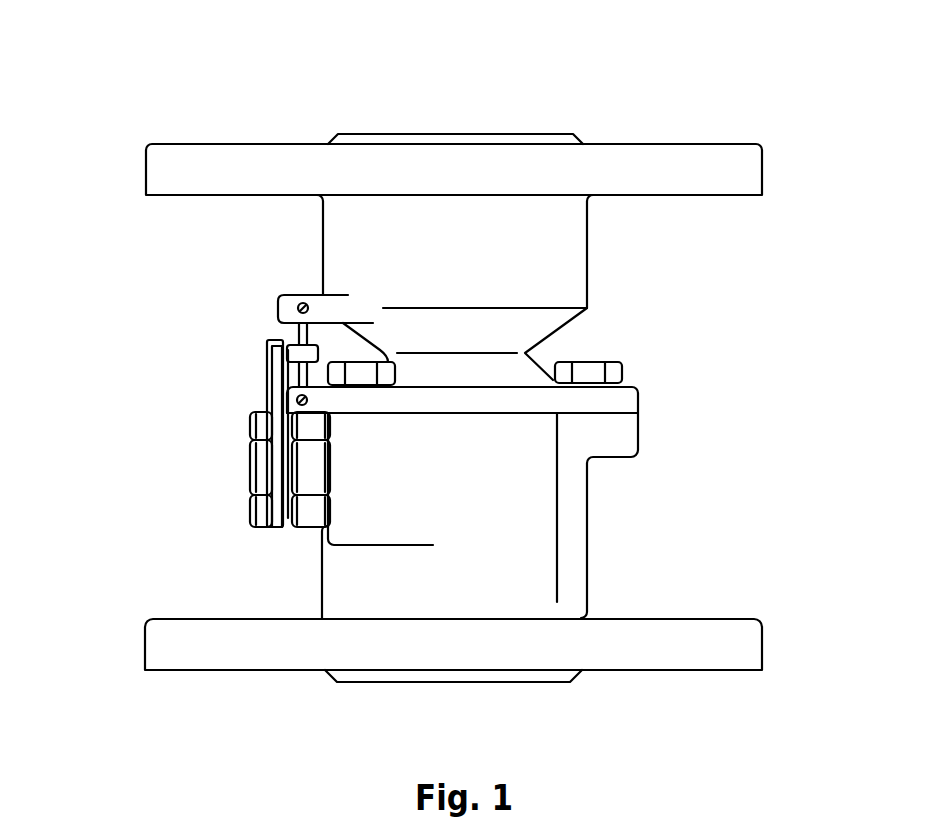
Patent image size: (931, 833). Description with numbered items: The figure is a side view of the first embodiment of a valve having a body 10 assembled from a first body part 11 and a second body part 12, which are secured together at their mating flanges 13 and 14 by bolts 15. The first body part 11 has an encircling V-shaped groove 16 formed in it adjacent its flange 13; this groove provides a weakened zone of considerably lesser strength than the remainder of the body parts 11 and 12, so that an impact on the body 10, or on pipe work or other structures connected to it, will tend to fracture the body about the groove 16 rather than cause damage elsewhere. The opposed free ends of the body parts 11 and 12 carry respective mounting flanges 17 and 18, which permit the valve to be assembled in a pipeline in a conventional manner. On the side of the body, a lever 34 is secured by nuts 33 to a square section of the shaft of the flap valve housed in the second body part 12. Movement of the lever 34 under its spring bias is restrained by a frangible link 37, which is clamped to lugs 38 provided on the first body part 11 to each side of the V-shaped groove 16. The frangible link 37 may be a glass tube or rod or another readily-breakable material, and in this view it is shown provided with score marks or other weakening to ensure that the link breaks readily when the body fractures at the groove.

The body 10 is at (667, 407).
The first body part 11 is at (577, 235).
The second body part 12 is at (567, 565).
The mating flange 13 is at (615, 400).
The mating flange 14 is at (623, 433).
The bolts 15 is at (592, 370).
The V-shaped groove 16 is at (577, 316).
The mounting flange 17 is at (730, 162).
The mounting flange 18 is at (673, 640).
The nuts 33 is at (318, 505).
The lever 34 is at (270, 388).
The frangible link 37 is at (290, 332).
The lugs 38 is at (290, 300).